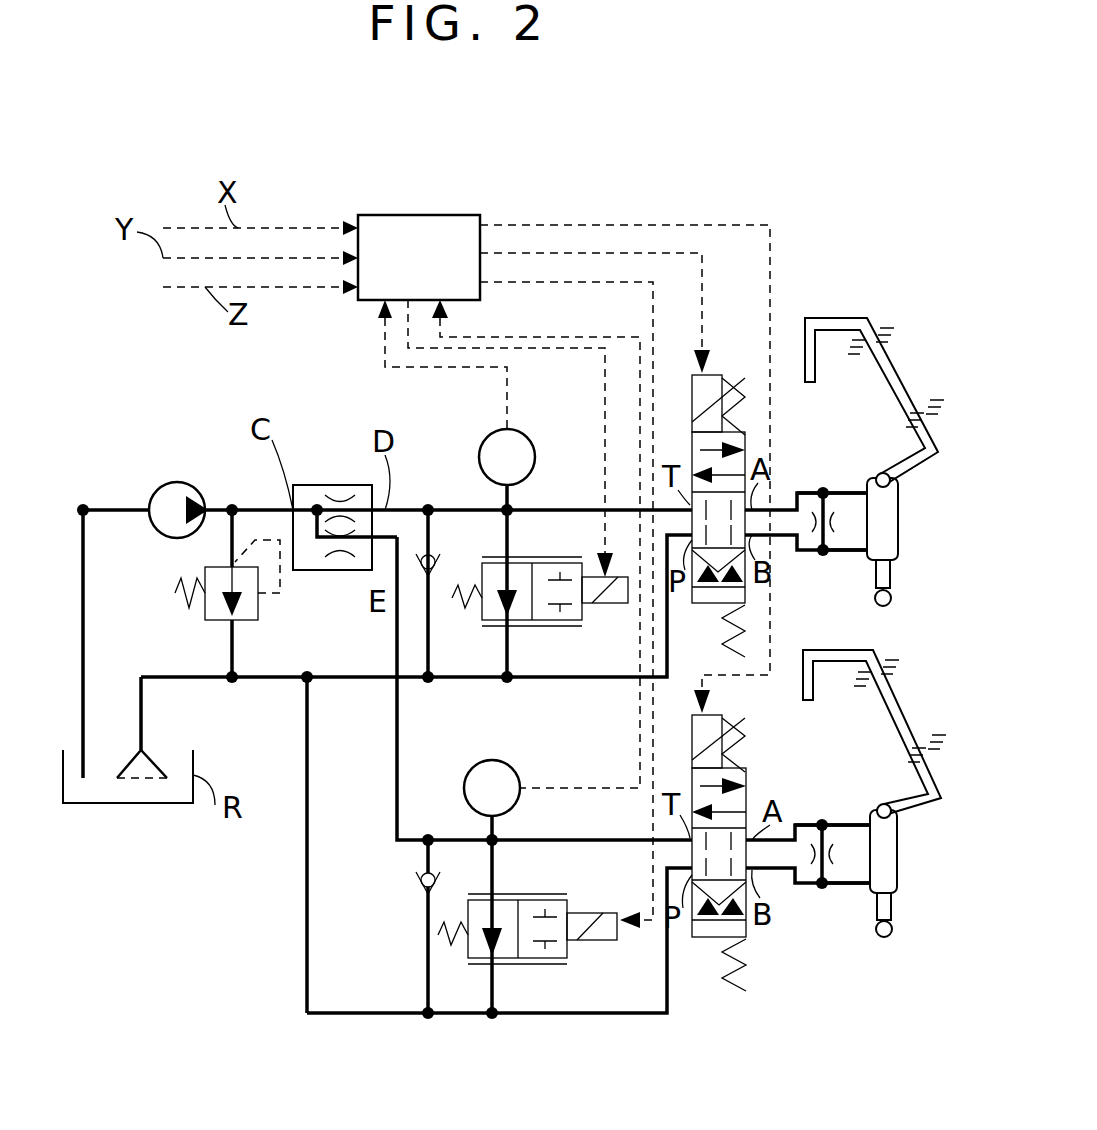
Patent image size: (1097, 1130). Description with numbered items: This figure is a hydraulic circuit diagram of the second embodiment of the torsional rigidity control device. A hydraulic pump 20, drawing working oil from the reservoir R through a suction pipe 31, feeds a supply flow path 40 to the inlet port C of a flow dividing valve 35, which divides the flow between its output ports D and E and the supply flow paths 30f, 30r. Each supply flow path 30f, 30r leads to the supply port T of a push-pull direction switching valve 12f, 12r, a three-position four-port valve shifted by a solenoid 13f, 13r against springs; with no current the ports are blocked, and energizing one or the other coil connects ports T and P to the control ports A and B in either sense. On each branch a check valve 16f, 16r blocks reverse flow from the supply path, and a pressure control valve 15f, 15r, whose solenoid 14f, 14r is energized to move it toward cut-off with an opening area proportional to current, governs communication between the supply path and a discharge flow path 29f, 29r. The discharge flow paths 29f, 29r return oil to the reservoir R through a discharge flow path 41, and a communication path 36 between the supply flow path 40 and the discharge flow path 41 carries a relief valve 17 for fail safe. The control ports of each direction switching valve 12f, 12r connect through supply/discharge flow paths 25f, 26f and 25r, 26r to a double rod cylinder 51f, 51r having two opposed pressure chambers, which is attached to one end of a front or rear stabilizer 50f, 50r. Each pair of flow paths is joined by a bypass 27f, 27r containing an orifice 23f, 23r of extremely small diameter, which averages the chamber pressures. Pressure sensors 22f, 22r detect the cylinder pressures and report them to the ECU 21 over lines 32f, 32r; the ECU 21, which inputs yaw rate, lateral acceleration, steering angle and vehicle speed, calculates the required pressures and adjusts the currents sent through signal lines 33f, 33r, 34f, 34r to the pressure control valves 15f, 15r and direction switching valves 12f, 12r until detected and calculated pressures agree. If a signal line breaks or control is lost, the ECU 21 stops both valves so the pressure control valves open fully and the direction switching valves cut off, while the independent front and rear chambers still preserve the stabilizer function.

The direction switching valve 12f is at (748, 440).
The direction switching valve 12r is at (748, 795).
The solenoid 13f is at (715, 375).
The solenoid 13r is at (722, 715).
The solenoid 14f is at (605, 603).
The solenoid 14r is at (588, 940).
The pressure control valve 15f is at (572, 563).
The pressure control valve 15r is at (520, 900).
The check valve 16f is at (436, 558).
The check valve 16r is at (420, 888).
The relief valve 17 is at (205, 625).
The hydraulic pump 20 is at (172, 482).
The ECU 21 is at (410, 215).
The pressure sensor 22f is at (535, 455).
The pressure sensor 22r is at (468, 775).
The orifice 23f is at (815, 548).
The orifice 23r is at (815, 885).
The supply/discharge flow path 25f is at (843, 493).
The supply/discharge flow path 25r is at (845, 825).
The supply/discharge flow path 26f is at (858, 553).
The supply/discharge flow path 26r is at (855, 886).
The bypass 27f is at (840, 553).
The bypass 27r is at (838, 886).
The discharge flow path 29f is at (540, 677).
The discharge flow path 29r is at (535, 1013).
The supply flow path 30f is at (420, 510).
The supply flow path 30r is at (397, 755).
The suction pipe 31 is at (83, 615).
The front sensor signal line 32f is at (440, 367).
The rear sensor signal line 32r is at (555, 337).
The signal line 33f is at (605, 362).
The signal line 33r is at (625, 282).
The signal line 34f is at (690, 253).
The signal line 34r is at (598, 225).
The flow dividing valve 35 is at (345, 460).
The communication path 36 is at (240, 660).
The supply flow path 40 is at (238, 505).
The discharge flow path 41 is at (300, 690).
The stabilizer 50f is at (833, 318).
The stabilizer 50r is at (935, 800).
The cylinder 51f is at (898, 530).
The cylinder 51r is at (898, 890).